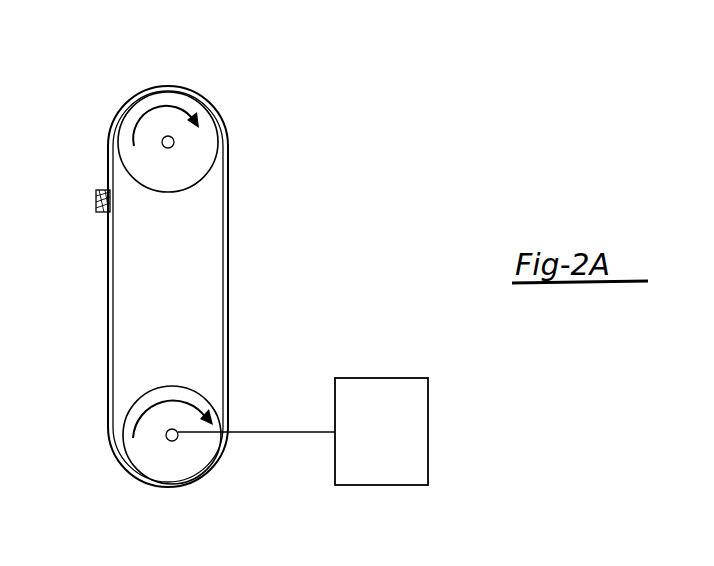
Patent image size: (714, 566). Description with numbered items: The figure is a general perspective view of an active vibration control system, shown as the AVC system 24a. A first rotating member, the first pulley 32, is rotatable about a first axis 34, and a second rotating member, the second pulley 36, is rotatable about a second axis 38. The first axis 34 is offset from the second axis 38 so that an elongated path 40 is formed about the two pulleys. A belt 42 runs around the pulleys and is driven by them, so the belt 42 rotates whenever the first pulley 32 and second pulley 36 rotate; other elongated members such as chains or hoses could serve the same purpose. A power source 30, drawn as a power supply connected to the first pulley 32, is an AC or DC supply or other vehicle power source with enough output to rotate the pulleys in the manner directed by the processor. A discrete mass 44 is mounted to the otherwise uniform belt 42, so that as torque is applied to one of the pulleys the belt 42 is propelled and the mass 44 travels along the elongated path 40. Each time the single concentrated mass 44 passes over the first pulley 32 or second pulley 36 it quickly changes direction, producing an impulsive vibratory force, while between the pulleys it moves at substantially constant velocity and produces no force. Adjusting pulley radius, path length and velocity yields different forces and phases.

The AVC system 24a is at (227, 86).
The elongated path 40 is at (248, 279).
The belt 42 is at (110, 290).
The second pulley 36 is at (176, 180).
The second axis 38 is at (175, 142).
The first pulley 32 is at (172, 387).
The first axis 34 is at (166, 435).
The discrete mass 44 is at (104, 190).
The power source 30 is at (396, 455).